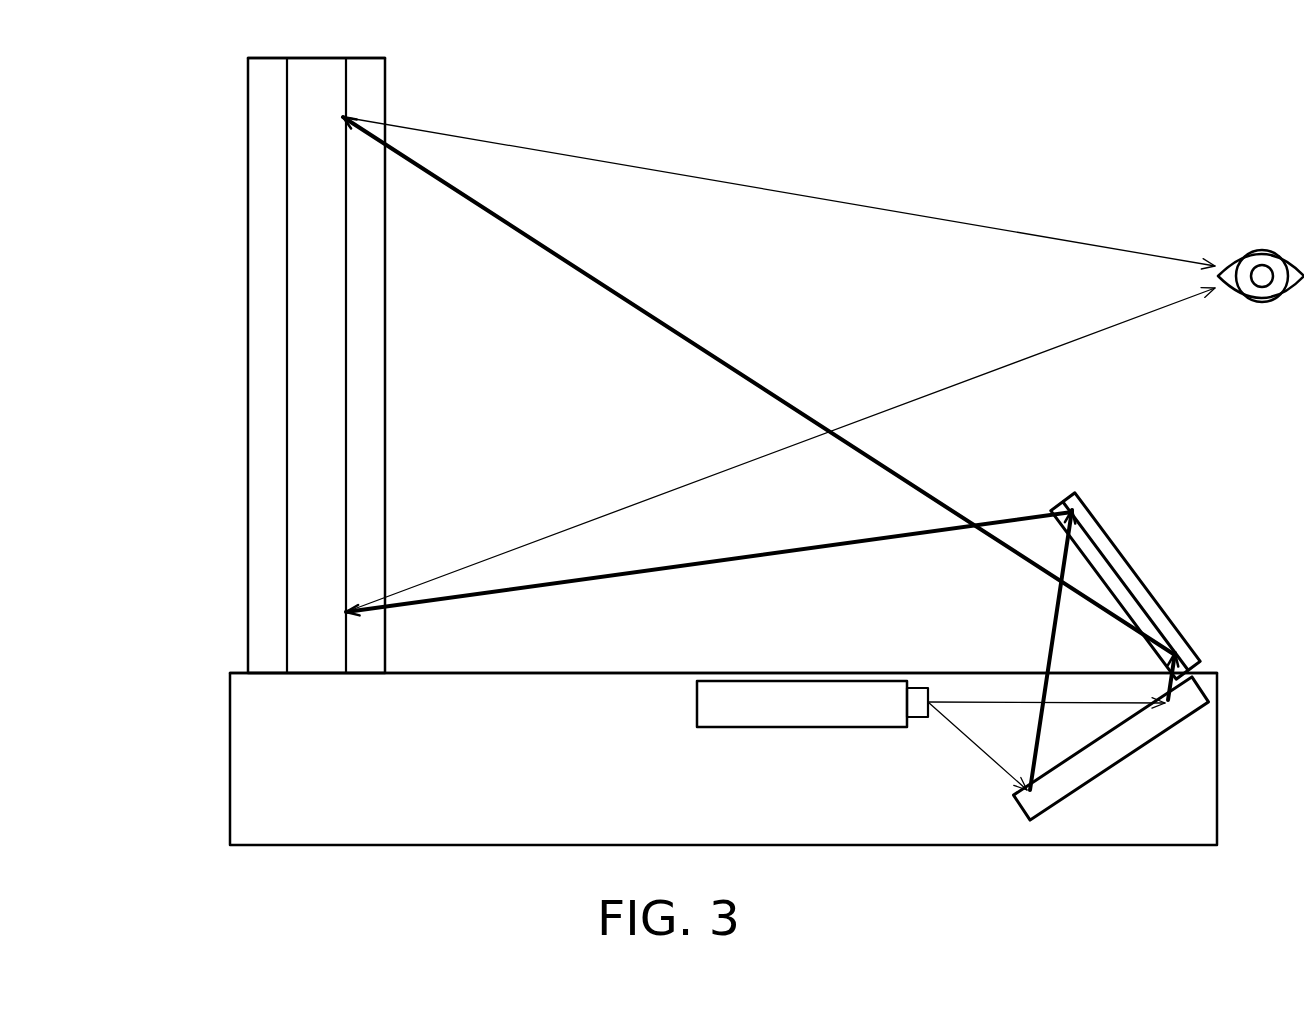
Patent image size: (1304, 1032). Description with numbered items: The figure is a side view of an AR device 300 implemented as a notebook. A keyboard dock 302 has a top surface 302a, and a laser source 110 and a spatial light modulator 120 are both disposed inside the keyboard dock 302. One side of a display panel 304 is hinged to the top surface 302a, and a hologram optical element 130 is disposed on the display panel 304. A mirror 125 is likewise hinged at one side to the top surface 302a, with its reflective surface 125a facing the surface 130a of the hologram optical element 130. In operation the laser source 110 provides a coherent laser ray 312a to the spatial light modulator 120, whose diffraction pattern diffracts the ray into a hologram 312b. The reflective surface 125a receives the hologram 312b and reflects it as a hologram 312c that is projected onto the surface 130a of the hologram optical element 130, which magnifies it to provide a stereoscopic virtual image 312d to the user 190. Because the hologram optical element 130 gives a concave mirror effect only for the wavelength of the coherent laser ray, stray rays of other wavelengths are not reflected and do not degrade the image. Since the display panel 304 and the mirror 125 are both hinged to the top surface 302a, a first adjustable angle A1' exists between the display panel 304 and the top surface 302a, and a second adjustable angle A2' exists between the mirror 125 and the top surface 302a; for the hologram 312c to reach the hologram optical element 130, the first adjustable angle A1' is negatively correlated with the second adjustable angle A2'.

The AR device 300 is at (108, 874).
The keyboard dock 302 is at (358, 868).
The top surface 302a is at (236, 673).
The display panel 304 is at (218, 130).
The hologram optical element 130 is at (317, 58).
The surface 130a is at (347, 225).
The laser source 110 is at (803, 727).
The spatial light modulator 120 is at (1170, 735).
The mirror 125 is at (1107, 523).
The reflective surface 125a is at (1108, 553).
The user 190 is at (1258, 252).
The coherent laser ray 312a is at (1008, 703).
The hologram 312b is at (1165, 698).
The hologram 312c is at (690, 342).
The stereoscopic virtual image 312d is at (973, 377).
The first adjustable angle A1' is at (428, 593).
The second adjustable angle A2' is at (1123, 646).